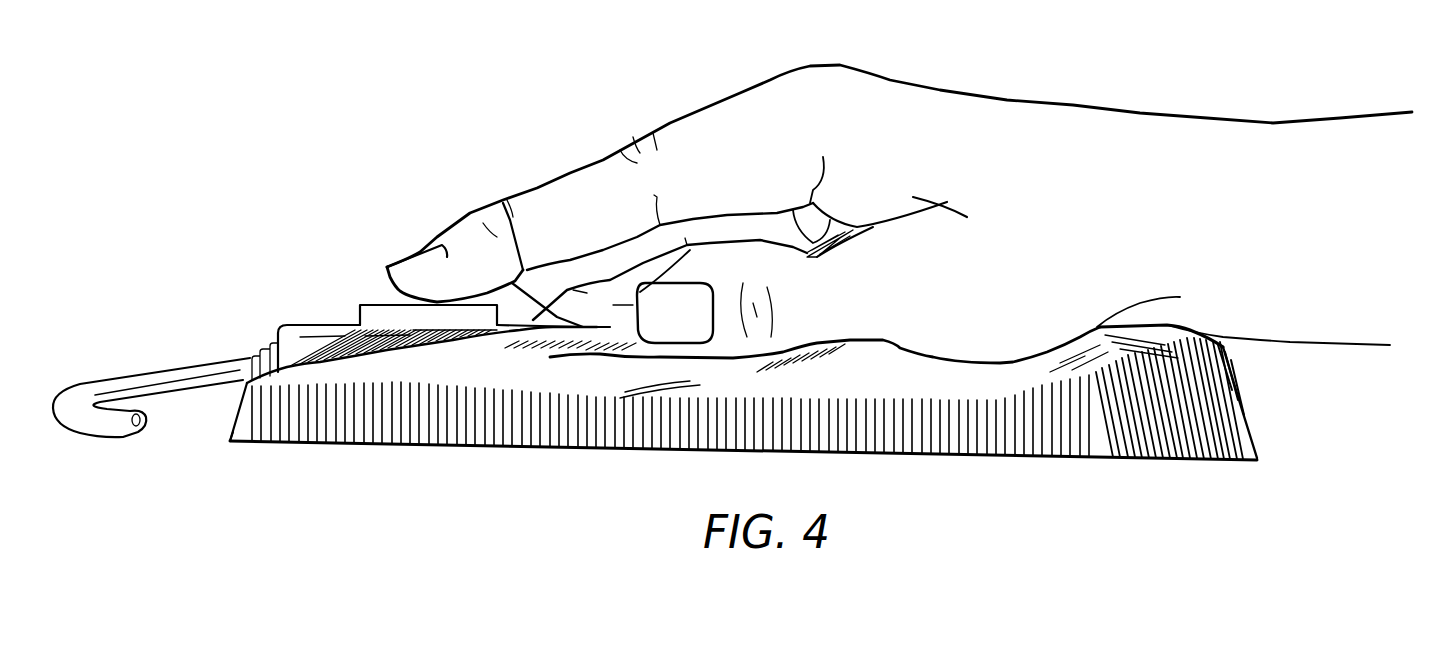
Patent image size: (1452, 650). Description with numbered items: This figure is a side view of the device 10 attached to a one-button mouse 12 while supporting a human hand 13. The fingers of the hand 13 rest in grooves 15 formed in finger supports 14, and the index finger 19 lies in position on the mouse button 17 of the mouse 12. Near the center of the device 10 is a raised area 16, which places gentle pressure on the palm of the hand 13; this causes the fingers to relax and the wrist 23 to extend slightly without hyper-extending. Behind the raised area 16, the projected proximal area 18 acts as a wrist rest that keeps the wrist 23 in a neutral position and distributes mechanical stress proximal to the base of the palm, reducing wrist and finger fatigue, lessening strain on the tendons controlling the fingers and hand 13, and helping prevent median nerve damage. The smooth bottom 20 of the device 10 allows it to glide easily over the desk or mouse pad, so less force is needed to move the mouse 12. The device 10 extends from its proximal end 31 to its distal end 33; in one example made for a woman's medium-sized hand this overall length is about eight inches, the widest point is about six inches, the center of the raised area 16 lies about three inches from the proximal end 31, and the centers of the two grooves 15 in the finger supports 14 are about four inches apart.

The device 10 is at (1347, 413).
The one-button mouse 12 is at (305, 318).
The human hand 13 is at (1032, 128).
The finger supports 14 is at (321, 375).
The grooves 15 is at (600, 342).
The raised area 16 is at (821, 223).
The mouse button 17 is at (362, 298).
The projected proximal area 18 is at (1227, 347).
The index finger 19 is at (455, 273).
The smooth bottom 20 is at (1000, 458).
The wrist 23 is at (1172, 205).
The proximal end 31 is at (1262, 462).
The distal end 33 is at (232, 442).